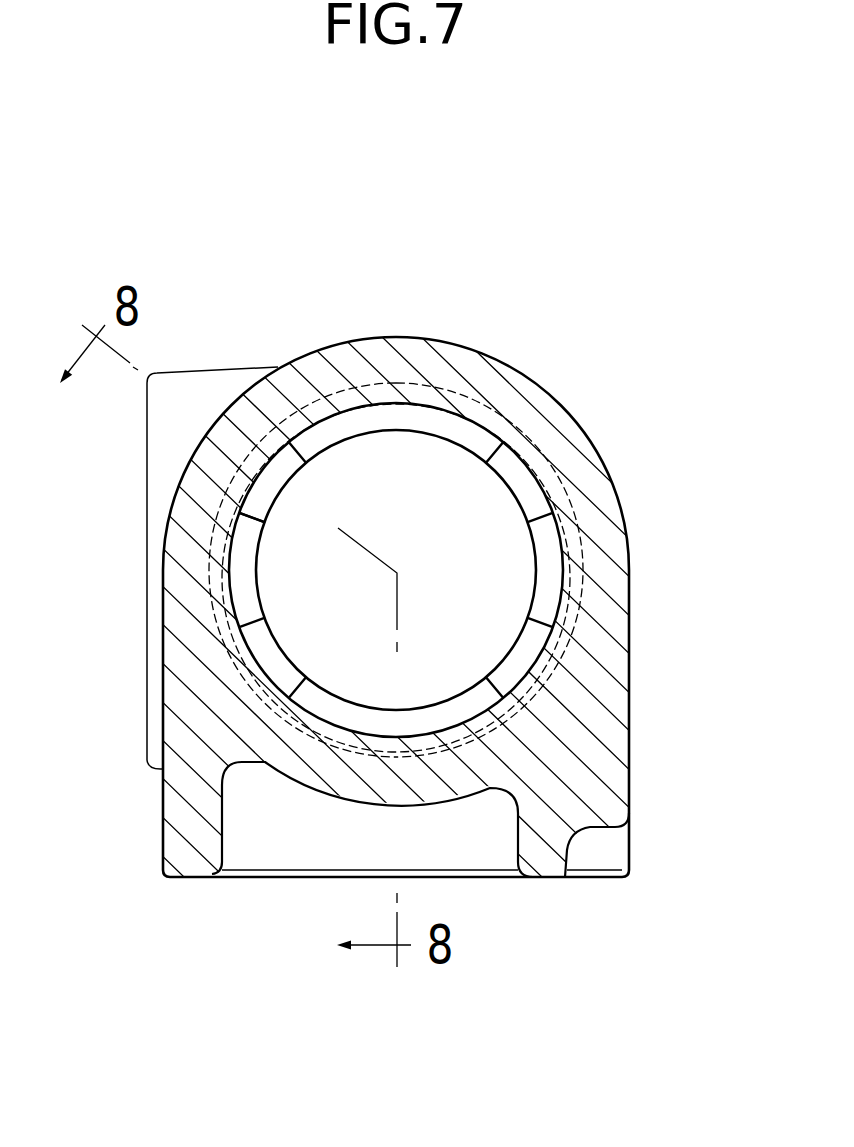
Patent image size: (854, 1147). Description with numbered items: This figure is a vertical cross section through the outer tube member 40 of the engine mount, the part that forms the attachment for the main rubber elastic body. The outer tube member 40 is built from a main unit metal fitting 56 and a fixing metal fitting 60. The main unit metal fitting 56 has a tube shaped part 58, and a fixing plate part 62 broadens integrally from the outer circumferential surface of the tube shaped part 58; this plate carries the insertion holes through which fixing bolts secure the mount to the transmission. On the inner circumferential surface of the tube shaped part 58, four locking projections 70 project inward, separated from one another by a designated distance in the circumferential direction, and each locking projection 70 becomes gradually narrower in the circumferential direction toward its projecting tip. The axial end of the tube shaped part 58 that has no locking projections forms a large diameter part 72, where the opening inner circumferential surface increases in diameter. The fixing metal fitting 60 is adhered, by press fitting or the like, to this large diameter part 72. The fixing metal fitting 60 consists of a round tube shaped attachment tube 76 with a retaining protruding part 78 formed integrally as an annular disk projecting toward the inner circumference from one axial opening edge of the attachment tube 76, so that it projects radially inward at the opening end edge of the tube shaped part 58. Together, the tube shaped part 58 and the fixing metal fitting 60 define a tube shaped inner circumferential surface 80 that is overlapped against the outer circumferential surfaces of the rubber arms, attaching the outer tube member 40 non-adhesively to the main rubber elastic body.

The outer tube member 40 is at (630, 317).
The main unit metal fitting 56 is at (595, 522).
The tube shaped part 58 is at (449, 340).
The fixing metal fitting 60 is at (332, 380).
The fixing plate part 62 is at (298, 862).
The locking projections 70 is at (272, 487).
The large diameter part 72 is at (221, 603).
The attachment tube 76 is at (560, 652).
The retaining protruding part 78 is at (243, 537).
The tube shaped inner circumferential surface 80 is at (406, 740).